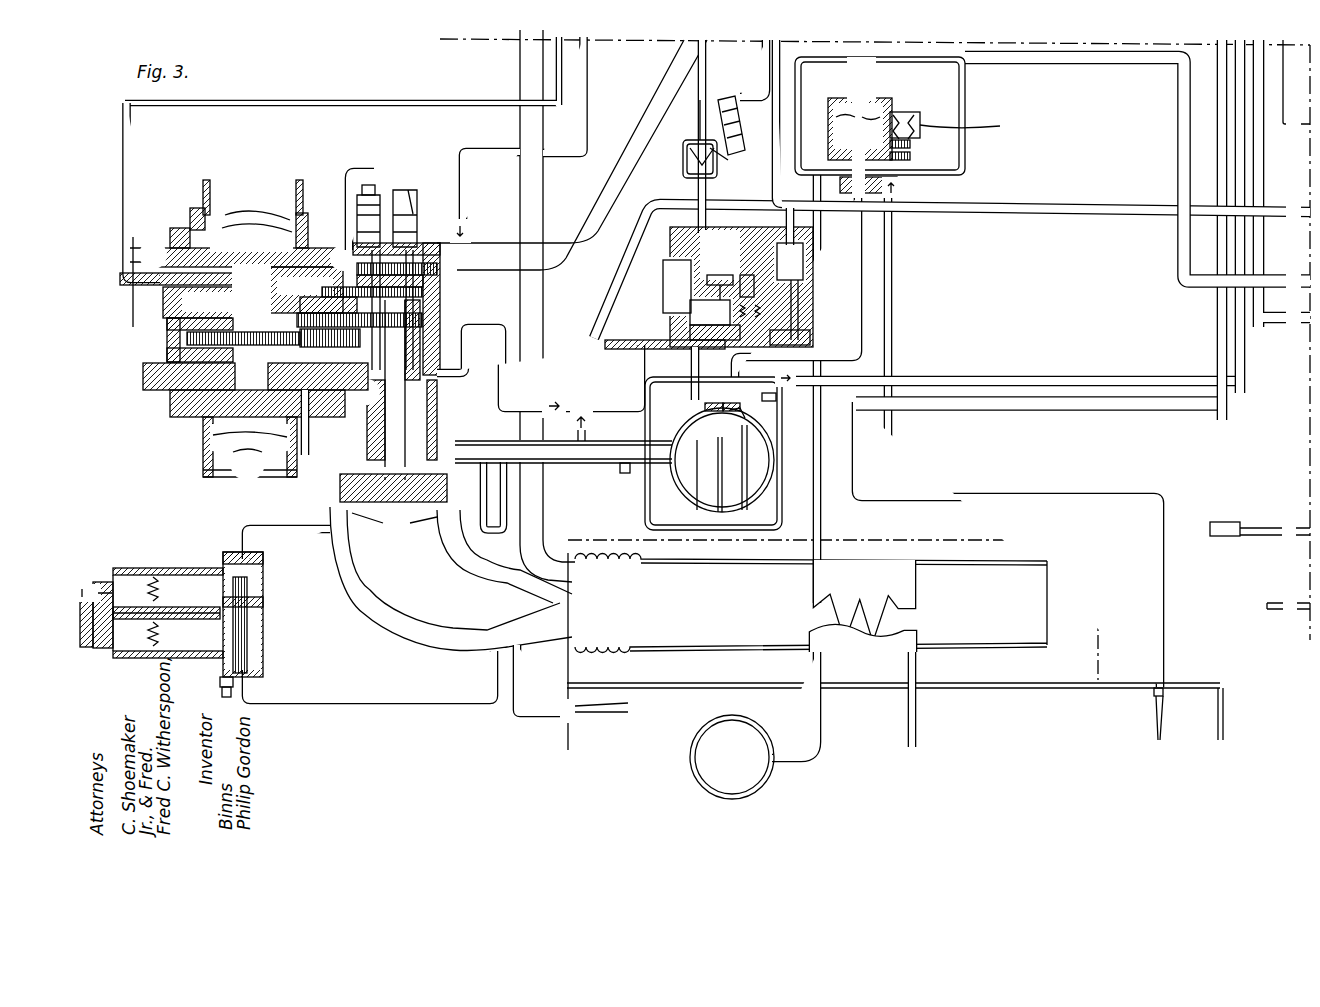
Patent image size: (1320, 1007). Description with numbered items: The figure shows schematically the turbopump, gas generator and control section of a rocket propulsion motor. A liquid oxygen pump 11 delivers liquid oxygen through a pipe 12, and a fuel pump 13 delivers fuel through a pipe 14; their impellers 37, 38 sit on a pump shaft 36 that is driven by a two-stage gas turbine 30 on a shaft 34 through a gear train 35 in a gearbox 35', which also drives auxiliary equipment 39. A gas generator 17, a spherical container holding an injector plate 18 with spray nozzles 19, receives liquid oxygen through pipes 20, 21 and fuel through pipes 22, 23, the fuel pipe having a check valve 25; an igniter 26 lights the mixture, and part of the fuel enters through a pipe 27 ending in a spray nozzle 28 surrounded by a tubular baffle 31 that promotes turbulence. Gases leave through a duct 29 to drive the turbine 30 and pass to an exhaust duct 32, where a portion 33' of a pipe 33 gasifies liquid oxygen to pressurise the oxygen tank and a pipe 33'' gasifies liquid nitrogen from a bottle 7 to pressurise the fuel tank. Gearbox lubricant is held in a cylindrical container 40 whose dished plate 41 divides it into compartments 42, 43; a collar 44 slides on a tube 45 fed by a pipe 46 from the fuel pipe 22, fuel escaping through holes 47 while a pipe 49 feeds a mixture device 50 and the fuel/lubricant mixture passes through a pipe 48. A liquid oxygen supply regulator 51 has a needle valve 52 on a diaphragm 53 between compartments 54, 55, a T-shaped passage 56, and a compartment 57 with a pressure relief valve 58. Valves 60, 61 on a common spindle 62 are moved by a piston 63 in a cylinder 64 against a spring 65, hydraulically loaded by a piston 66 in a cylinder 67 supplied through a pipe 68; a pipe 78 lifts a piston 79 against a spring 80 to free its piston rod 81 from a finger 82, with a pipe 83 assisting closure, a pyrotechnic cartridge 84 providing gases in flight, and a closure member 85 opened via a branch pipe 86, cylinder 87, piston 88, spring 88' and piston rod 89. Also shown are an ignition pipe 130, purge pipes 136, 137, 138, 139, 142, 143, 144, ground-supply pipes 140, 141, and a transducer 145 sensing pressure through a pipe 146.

The bottle 7 is at (753, 727).
The liquid oxygen pump 11 is at (300, 180).
The pipe 12 is at (598, 178).
The fuel pump 13 is at (298, 473).
The pipe 14 is at (520, 70).
The gas generator 17 is at (777, 425).
The injector plate 18 is at (730, 388).
The spray nozzles 19 is at (733, 400).
The pipe 20 is at (1040, 57).
The pipe 21 is at (860, 260).
The pipe 22 is at (580, 411).
The pipe 23 is at (613, 343).
The check valve 25 is at (553, 397).
The igniter 26 is at (770, 398).
The pipe 27 is at (782, 467).
The spray nozzle 28 is at (717, 433).
The duct 29 is at (640, 473).
The two-stage gas turbine 30 is at (362, 506).
The tubular baffle 31 is at (743, 475).
The exhaust duct 32 is at (380, 627).
The pipe 33 is at (833, 389).
The portion 33' is at (883, 653).
The pipe 33'' is at (818, 705).
The shaft 34 is at (410, 387).
The gear train 35 is at (302, 312).
The gearbox 35' is at (478, 197).
The pump shaft 36 is at (290, 240).
The impeller 37 is at (255, 180).
The impeller 38 is at (240, 476).
The auxiliary equipment 39 is at (400, 192).
The cylindrical container 40 is at (140, 660).
The dished plate 41 is at (165, 585).
The compartment 42 is at (200, 638).
The compartment 43 is at (128, 645).
The collar 44 is at (157, 603).
The tube 45 is at (185, 622).
The pipe 46 is at (304, 533).
The holes 47 is at (143, 590).
The pipe 48 is at (293, 700).
The pipe 49 is at (262, 581).
The mixture device 50 is at (262, 601).
The liquid oxygen supply regulator 51 is at (933, 118).
The needle valve 52 is at (898, 188).
The diaphragm 53 is at (867, 117).
The compartment 54 is at (848, 102).
The compartment 55 is at (892, 102).
The T-shaped passage 56 is at (907, 163).
The compartment 57 is at (832, 145).
The pressure relief valve 58 is at (910, 147).
The valve 60 is at (780, 350).
The valve 61 is at (687, 347).
The spindle 62 is at (693, 333).
The piston 63 is at (798, 307).
The cylinder 64 is at (797, 327).
The spring 65 is at (752, 283).
The piston 66 is at (790, 267).
The cylinder 67 is at (783, 240).
The pipe 68 is at (787, 107).
The pipe 78 is at (702, 98).
The piston 79 is at (717, 283).
The spring 80 is at (710, 287).
The piston rod 81 is at (747, 263).
The finger 82 is at (693, 313).
The pipe 83 is at (723, 223).
The pyrotechnic cartridge 84 is at (667, 283).
The closure member 85 is at (685, 167).
The branch pipe 86 is at (750, 90).
The cylinder 87 is at (720, 102).
The piston 88 is at (743, 121).
The spring 88' is at (746, 137).
The piston rod 89 is at (720, 158).
The pipe 130 is at (1010, 206).
The pipe 136 is at (1283, 67).
The pipe 137 is at (1262, 140).
The pipe 138 is at (1244, 168).
The pipe 139 is at (1226, 190).
The pipe 140 is at (540, 712).
The pipe 141 is at (1163, 607).
The pipe 142 is at (130, 170).
The pipe 143 is at (270, 103).
The pipe 144 is at (1296, 606).
The transducer 145 is at (1233, 510).
The pipe 146 is at (1254, 536).